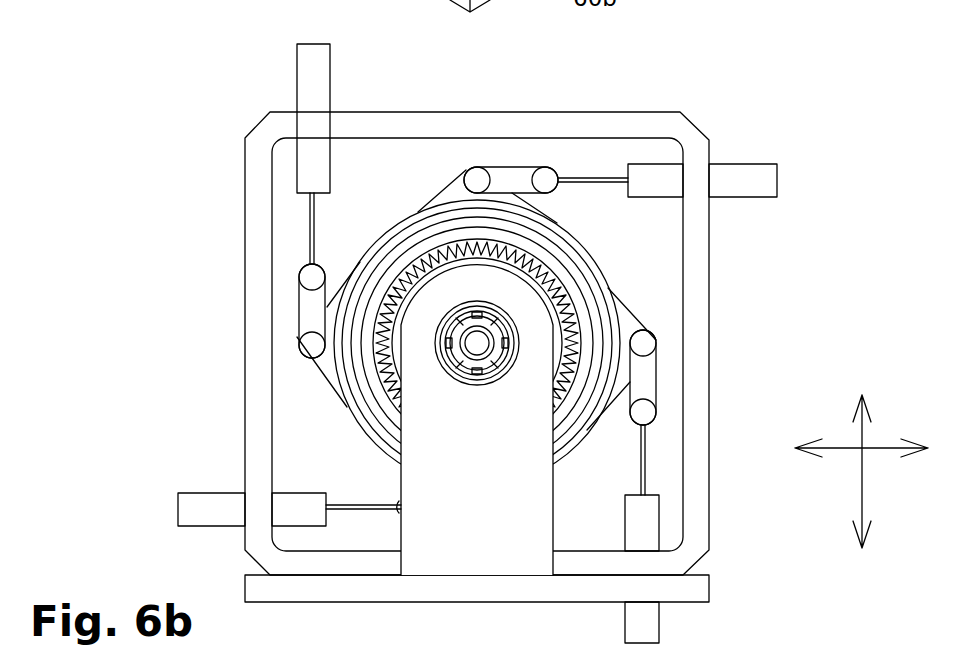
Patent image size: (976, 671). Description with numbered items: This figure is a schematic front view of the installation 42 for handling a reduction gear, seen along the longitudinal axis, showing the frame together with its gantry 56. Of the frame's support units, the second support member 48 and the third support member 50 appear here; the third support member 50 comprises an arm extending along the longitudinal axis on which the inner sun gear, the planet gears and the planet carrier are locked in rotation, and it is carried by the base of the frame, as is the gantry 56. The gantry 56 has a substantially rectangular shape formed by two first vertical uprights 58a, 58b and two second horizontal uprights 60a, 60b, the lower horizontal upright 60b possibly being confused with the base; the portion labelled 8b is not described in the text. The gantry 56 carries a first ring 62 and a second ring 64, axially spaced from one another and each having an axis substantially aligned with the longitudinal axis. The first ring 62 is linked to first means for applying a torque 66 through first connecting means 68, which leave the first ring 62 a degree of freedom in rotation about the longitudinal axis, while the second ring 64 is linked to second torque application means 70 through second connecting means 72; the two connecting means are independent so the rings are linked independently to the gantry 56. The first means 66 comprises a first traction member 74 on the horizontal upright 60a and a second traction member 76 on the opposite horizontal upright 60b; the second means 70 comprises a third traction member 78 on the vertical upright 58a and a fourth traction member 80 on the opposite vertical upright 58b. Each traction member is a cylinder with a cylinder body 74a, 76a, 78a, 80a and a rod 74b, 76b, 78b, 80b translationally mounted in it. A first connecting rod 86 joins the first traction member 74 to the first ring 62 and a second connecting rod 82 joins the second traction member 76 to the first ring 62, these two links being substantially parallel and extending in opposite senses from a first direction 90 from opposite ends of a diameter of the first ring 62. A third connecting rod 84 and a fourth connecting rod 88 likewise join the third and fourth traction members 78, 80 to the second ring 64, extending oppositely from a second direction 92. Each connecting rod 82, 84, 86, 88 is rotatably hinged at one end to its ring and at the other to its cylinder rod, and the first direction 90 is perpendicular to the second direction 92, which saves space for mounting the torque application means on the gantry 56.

The section 8b is at (772, 590).
The installation 42 is at (724, 290).
The second support member 48 is at (519, 0).
The third support member 50 is at (527, 552).
The gantry 56 is at (702, 120).
The first vertical upright 58a is at (700, 340).
The first vertical upright 58b is at (262, 275).
The second horizontal upright 60a is at (580, 125).
The second horizontal upright 60b is at (580, 560).
The first ring 62 is at (298, 402).
The second ring 64 is at (440, 196).
The first means for applying a torque 66 is at (307, 38).
The first connecting means 68 is at (294, 316).
The second torque application means 70 is at (795, 173).
The second connecting means 72 is at (508, 156).
The first traction member 74 is at (332, 70).
The cylinder body 74a is at (297, 73).
The rod 74b is at (310, 225).
The second traction member 76 is at (665, 530).
The cylinder body 76a is at (650, 510).
The rod 76b is at (643, 460).
The third traction member 78 is at (750, 205).
The cylinder body 78a is at (746, 178).
The rod 78b is at (600, 178).
The fourth traction member 80 is at (220, 532).
The cylinder body 80a is at (304, 527).
The rod 80b is at (350, 511).
The second connecting rod 82 is at (647, 387).
The third connecting rod 84 is at (528, 177).
The first connecting rod 86 is at (310, 300).
The fourth connecting rod 88 is at (383, 512).
The first direction 90 is at (870, 485).
The second direction 92 is at (886, 440).